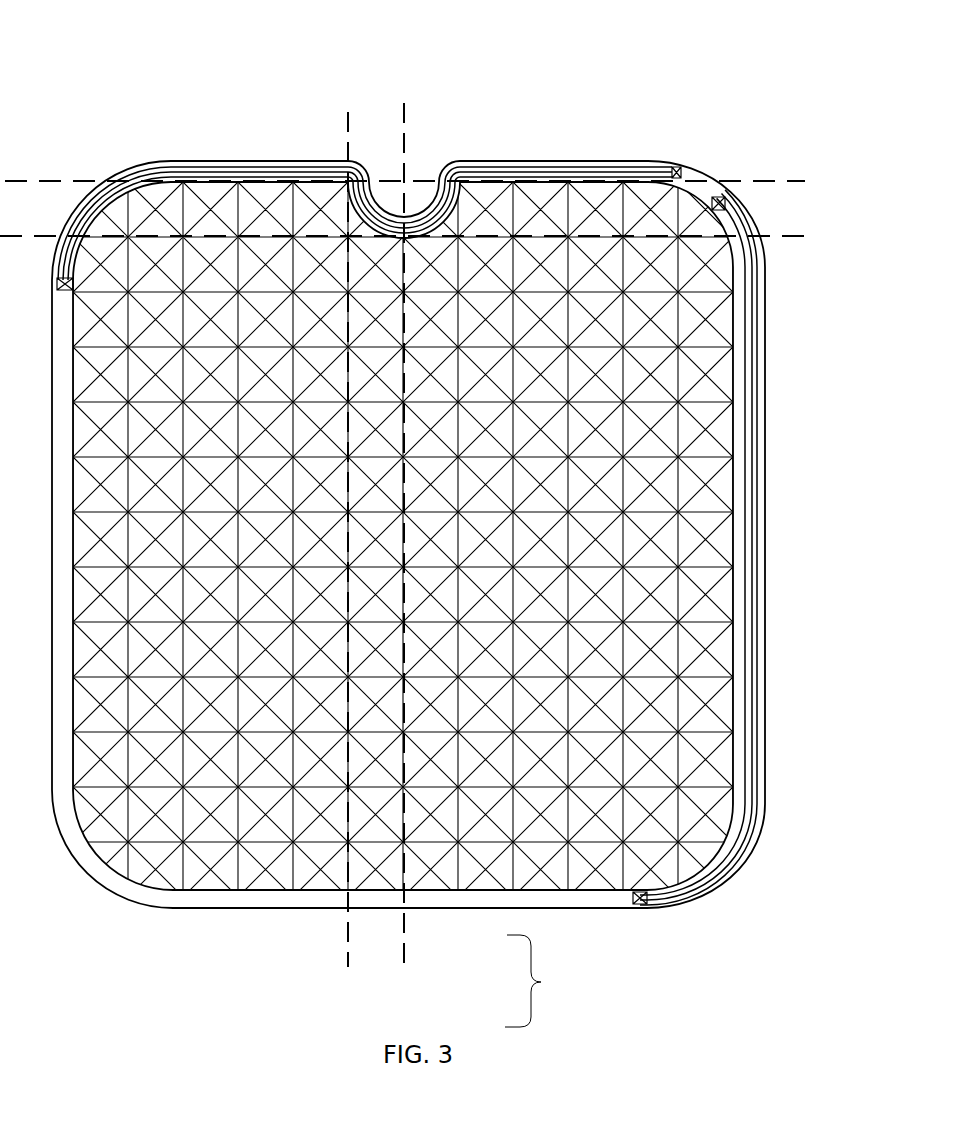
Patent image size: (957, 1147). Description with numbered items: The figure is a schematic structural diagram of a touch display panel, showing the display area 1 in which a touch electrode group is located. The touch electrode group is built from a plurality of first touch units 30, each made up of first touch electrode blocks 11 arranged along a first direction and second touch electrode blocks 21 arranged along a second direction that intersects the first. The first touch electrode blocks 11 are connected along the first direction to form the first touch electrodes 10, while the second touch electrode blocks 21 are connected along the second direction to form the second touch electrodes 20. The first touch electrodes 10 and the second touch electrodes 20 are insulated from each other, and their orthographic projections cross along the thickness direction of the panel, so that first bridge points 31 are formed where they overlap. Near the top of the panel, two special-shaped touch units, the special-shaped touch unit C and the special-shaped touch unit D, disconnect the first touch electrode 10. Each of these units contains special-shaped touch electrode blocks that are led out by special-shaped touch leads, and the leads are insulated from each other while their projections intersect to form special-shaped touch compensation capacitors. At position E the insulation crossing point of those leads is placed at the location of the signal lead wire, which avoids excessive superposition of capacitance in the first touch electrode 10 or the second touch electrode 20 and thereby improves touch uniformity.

The display area 1 is at (745, 420).
The first touch electrode 10 is at (37, 208).
The second touch electrode 20 is at (383, 160).
The first touch unit 30 is at (543, 981).
The first touch electrode block 11 is at (393, 858).
The second touch electrode block 21 is at (360, 883).
The first bridge point 31 is at (378, 868).
The special-shaped touch unit C is at (358, 228).
The special-shaped touch unit D is at (440, 228).
The position of insulation crossing point E is at (380, 207).